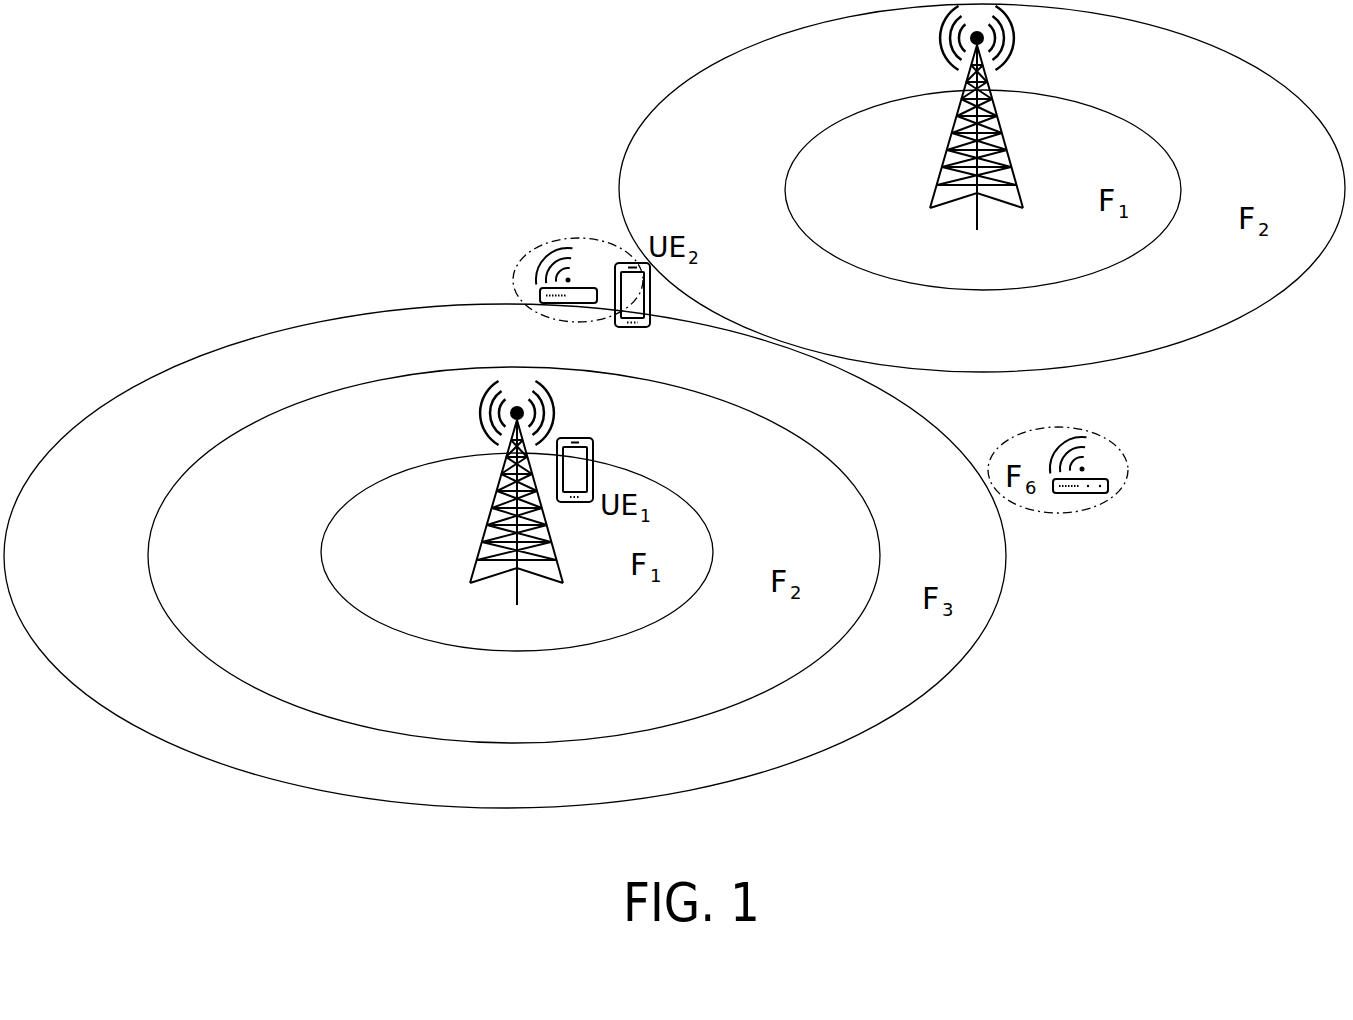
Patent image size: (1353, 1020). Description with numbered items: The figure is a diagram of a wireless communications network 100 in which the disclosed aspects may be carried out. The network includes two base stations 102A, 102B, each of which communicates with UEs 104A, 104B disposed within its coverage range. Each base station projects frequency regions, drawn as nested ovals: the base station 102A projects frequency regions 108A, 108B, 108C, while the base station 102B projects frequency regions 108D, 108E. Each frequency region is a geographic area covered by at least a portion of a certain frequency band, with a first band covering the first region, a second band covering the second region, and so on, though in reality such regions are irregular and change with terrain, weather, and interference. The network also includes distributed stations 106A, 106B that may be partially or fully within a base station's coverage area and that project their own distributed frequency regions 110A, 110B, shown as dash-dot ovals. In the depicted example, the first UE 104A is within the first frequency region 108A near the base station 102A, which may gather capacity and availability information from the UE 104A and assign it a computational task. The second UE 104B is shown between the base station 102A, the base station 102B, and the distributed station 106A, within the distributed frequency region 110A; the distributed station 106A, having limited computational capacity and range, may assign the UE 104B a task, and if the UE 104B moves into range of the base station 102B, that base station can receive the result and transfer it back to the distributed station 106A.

The wireless communications network 100 is at (103, 147).
The base station 102A is at (480, 412).
The base station 102B is at (940, 41).
The UE 104A is at (593, 457).
The UE 104B is at (650, 287).
The distributed station 106A is at (538, 262).
The distributed station 106B is at (1075, 438).
The frequency region 108A is at (590, 630).
The frequency region 108B is at (619, 703).
The frequency region 108C is at (652, 779).
The frequency region 108D is at (1063, 264).
The frequency region 108E is at (1085, 341).
The distributed frequency region 110A is at (514, 279).
The distributed frequency region 110B is at (1033, 443).